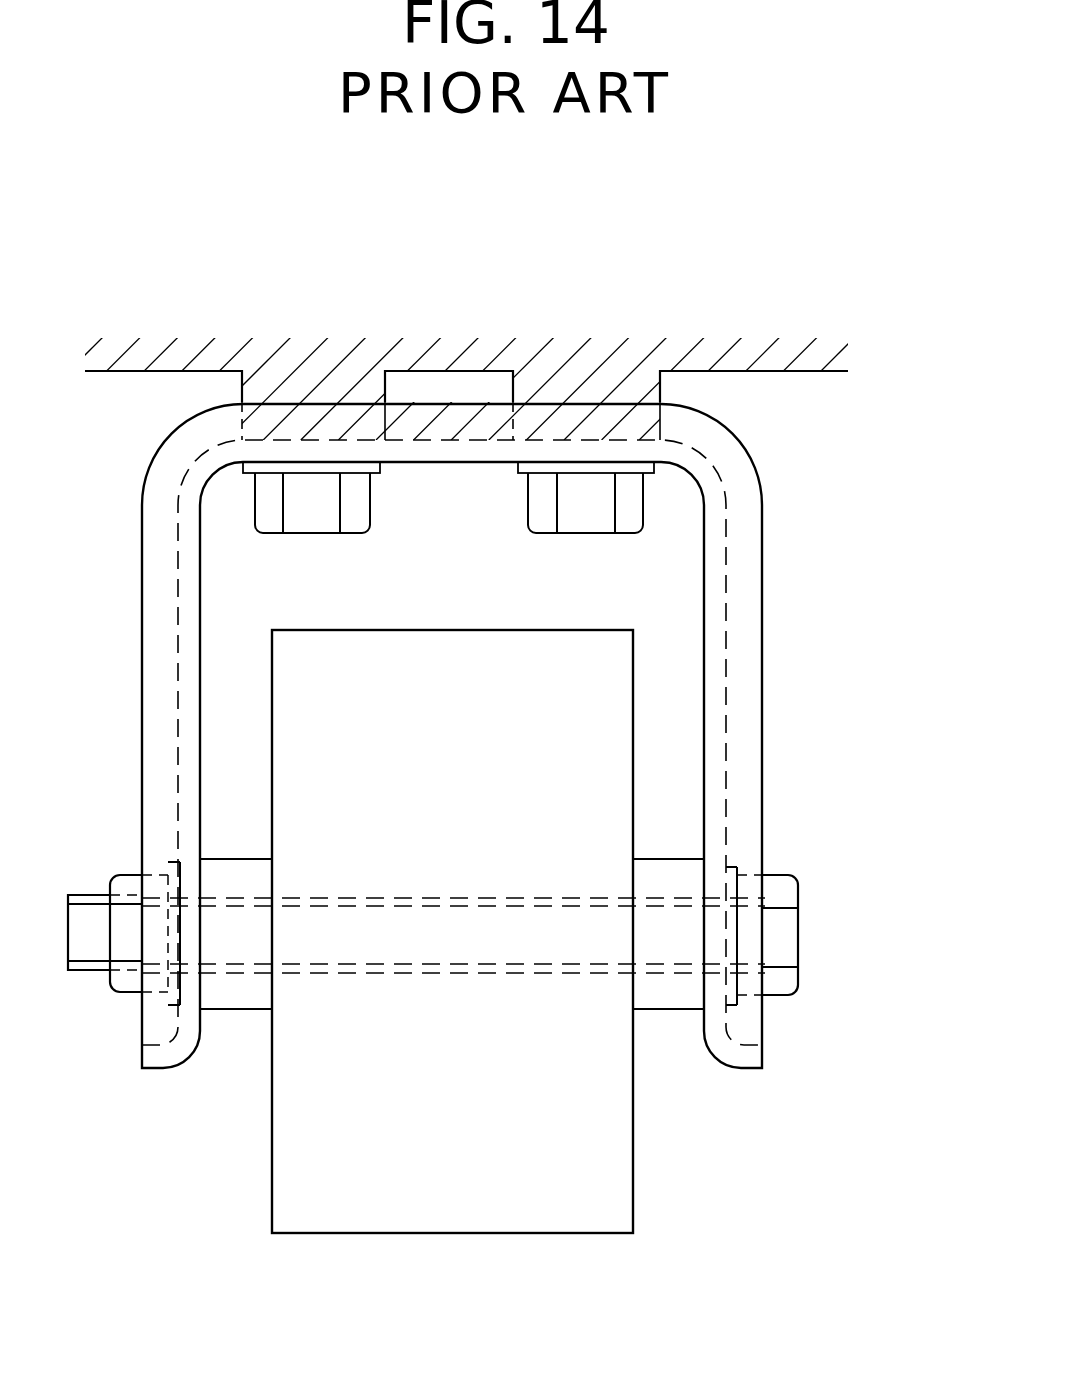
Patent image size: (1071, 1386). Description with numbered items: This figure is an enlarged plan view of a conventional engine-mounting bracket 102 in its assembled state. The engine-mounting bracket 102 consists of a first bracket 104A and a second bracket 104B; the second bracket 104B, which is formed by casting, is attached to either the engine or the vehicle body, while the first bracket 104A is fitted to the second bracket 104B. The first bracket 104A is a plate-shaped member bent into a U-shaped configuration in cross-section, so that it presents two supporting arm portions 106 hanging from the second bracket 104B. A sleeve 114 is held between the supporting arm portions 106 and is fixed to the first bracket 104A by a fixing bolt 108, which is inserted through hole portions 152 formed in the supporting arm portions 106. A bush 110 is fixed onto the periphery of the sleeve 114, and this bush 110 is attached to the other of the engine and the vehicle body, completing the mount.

The engine-mounting bracket 102 is at (850, 238).
The first bracket 104A is at (725, 426).
The second bracket 104B is at (783, 358).
The supporting arm portions 106 is at (764, 621).
The fixing bolt 108 is at (800, 919).
The bush 110 is at (323, 1215).
The sleeve 114 is at (663, 1002).
The hole portions 152 is at (720, 903).